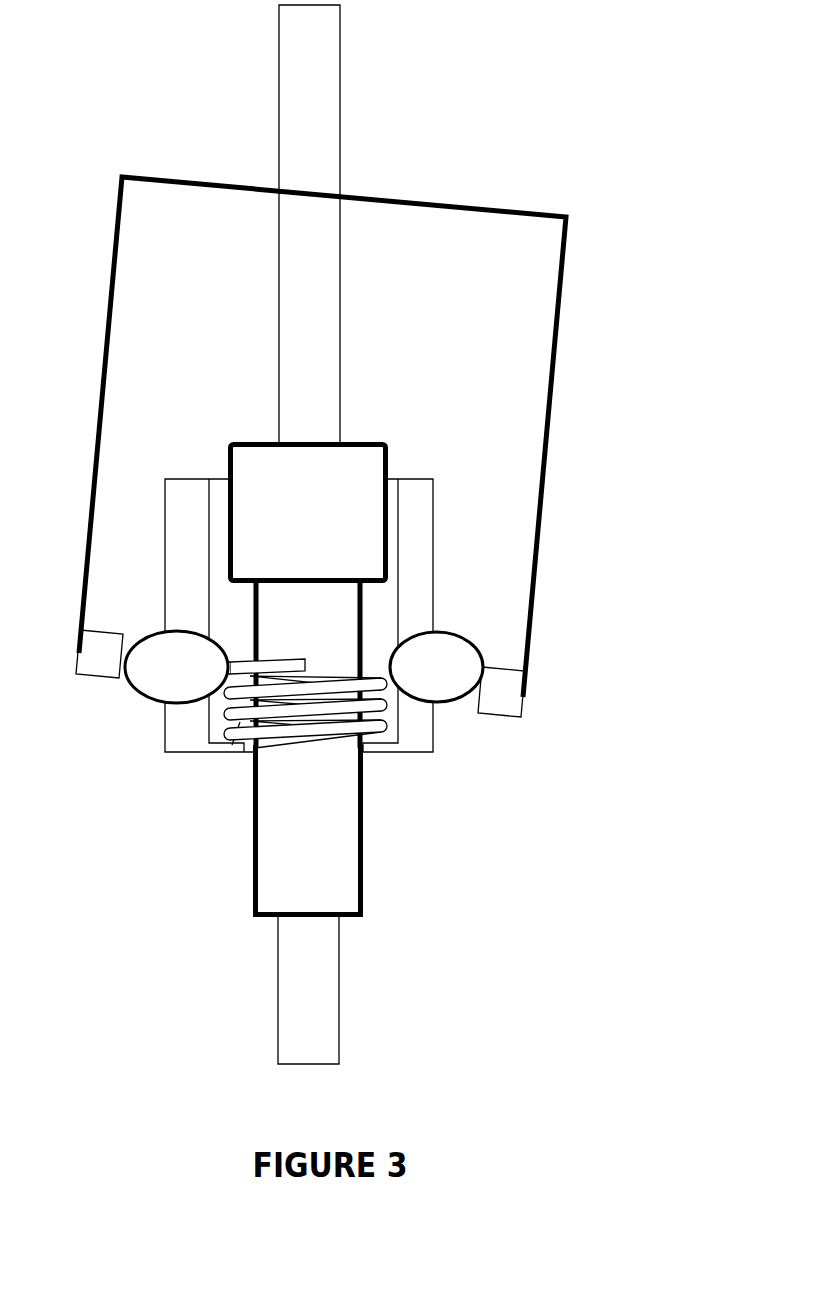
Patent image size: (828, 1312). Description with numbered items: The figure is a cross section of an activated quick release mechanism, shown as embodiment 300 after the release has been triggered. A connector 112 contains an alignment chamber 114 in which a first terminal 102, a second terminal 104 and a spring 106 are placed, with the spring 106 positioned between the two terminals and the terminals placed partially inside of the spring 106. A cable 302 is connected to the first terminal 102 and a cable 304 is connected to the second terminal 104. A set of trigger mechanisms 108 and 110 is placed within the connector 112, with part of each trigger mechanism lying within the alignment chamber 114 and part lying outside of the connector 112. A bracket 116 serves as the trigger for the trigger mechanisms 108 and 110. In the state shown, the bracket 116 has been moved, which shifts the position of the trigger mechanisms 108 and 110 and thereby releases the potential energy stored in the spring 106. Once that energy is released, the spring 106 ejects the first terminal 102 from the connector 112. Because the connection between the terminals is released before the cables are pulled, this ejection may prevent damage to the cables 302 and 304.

The embodiment of the quick release mechanism 300 is at (573, 120).
The cable 302 is at (309, 223).
The cable 304 is at (308, 990).
The first terminal 102 is at (308, 513).
The second terminal 104 is at (308, 830).
The spring 106 is at (225, 755).
The trigger mechanism 108 is at (436, 667).
The trigger mechanism 110 is at (176, 667).
The connector 112 is at (166, 480).
The alignment chamber 114 is at (286, 665).
The bracket 116 is at (125, 178).